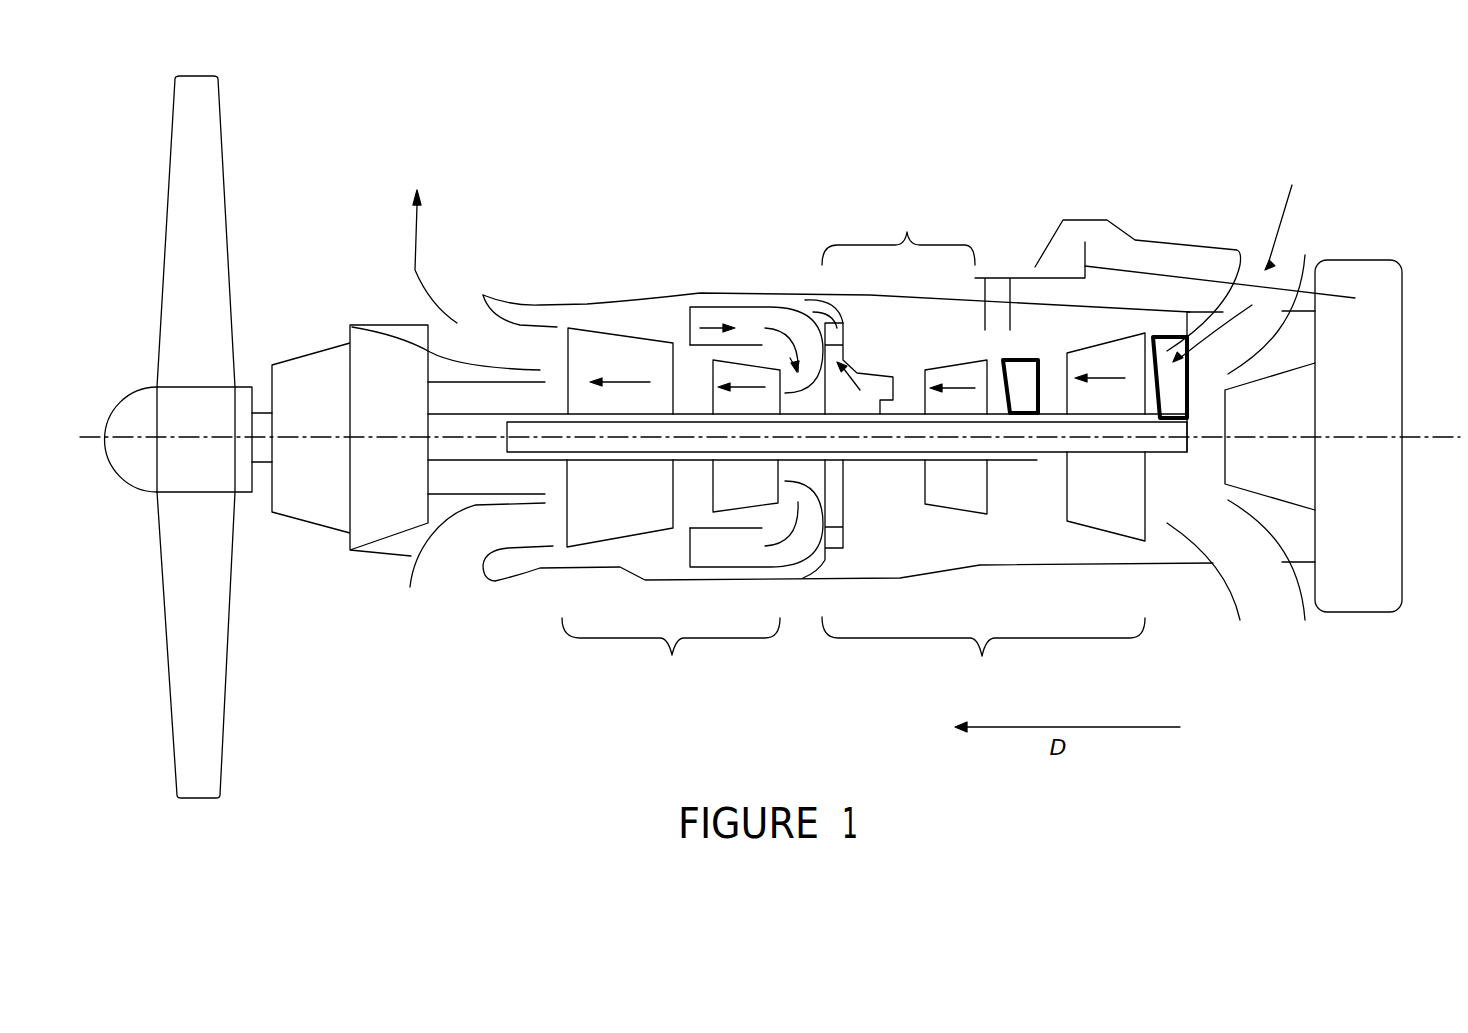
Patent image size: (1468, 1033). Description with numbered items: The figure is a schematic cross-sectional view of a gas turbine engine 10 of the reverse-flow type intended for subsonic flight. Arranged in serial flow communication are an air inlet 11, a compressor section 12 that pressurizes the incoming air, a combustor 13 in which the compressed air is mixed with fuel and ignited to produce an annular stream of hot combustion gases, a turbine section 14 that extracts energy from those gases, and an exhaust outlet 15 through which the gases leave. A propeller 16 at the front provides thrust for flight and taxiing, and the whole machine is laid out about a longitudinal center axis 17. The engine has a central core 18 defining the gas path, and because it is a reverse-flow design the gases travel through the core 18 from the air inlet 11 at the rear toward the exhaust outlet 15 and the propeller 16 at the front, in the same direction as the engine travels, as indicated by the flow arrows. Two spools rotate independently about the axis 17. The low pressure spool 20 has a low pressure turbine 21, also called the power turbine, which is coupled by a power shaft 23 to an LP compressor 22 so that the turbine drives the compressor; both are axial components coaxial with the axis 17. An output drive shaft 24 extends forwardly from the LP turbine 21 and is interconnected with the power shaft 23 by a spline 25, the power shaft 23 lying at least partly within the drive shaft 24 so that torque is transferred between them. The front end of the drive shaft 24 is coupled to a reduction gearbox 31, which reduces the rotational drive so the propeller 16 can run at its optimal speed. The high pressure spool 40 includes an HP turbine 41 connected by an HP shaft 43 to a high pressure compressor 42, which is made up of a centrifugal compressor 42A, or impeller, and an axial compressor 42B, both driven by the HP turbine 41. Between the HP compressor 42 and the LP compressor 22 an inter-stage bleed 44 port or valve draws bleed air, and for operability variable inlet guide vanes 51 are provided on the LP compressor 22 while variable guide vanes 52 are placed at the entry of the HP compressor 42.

The gas turbine engine 10 is at (303, 132).
The air inlet 11 is at (1318, 237).
The compressor section 12 is at (983, 651).
The combustor 13 is at (765, 305).
The turbine section 14 is at (604, 538).
The exhaust outlet 15 is at (437, 587).
The propeller 16 is at (142, 386).
The longitudinal center axis 17 is at (1428, 432).
The central core 18 is at (640, 358).
The low pressure spool 20 is at (1057, 464).
The low pressure turbine 21 is at (590, 343).
The LP compressor 22 is at (1125, 318).
The power shaft 23 is at (695, 418).
The output drive shaft 24 is at (487, 400).
The spline 25 is at (535, 414).
The reduction gearbox 31 is at (383, 363).
The high pressure spool 40 is at (1006, 392).
The HP turbine 41 is at (745, 342).
The high pressure compressor 42 is at (898, 230).
The centrifugal compressor 42A is at (865, 462).
The axial compressor 42B is at (963, 500).
The HP shaft 43 is at (878, 495).
The inter-stage bleed 44 is at (1000, 258).
The variable inlet guide vanes 51 is at (1187, 337).
The variable guide vanes 52 is at (1042, 362).